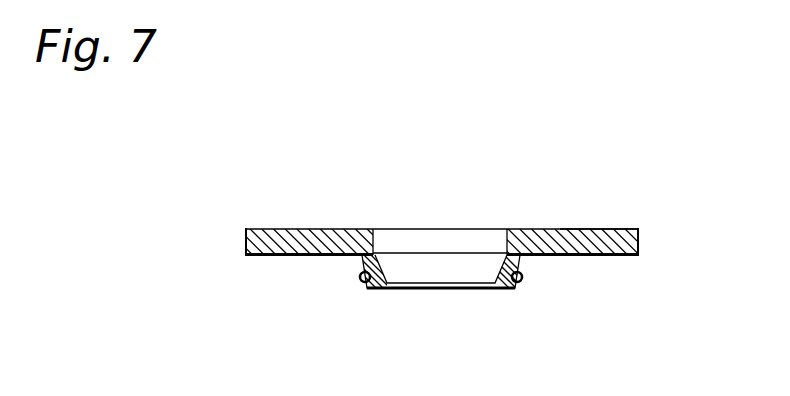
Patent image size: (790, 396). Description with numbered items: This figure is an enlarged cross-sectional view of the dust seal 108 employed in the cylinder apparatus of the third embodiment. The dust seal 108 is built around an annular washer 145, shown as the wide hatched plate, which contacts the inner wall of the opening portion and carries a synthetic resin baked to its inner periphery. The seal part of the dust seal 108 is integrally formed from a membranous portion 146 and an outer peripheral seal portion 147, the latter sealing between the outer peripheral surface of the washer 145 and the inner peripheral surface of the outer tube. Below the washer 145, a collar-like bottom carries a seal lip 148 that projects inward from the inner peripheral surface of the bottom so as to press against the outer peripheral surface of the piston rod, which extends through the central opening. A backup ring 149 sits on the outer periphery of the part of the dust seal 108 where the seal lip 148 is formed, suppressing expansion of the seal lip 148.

The dust seal 108 is at (477, 258).
The annular washer 145 is at (568, 240).
The membranous portion 146 is at (593, 257).
The outer peripheral seal portion 147 is at (638, 248).
The seal lip 148 is at (495, 287).
The backup ring 149 is at (358, 278).